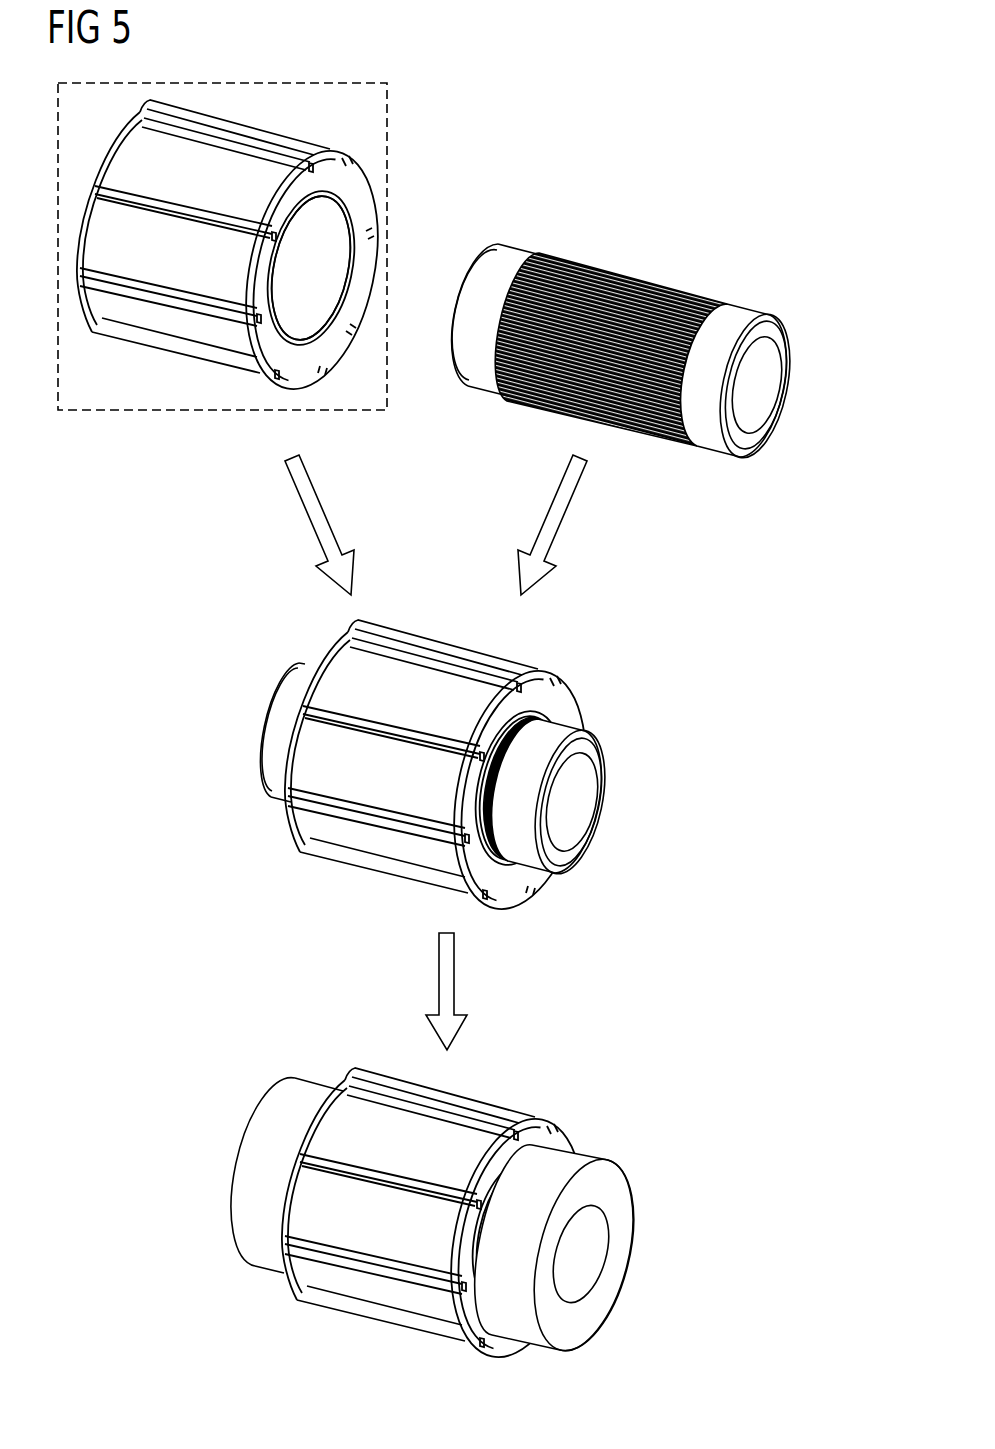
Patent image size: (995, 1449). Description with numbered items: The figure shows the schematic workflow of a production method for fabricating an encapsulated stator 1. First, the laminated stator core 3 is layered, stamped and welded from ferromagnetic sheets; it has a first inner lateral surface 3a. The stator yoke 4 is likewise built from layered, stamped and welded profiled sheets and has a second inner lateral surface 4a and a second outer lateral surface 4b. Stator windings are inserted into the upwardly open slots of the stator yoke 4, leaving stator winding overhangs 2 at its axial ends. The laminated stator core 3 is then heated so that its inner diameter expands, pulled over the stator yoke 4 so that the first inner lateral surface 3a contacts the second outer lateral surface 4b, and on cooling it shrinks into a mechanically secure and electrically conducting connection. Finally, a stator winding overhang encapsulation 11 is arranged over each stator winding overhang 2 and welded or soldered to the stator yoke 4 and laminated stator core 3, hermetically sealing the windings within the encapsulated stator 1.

The encapsulated stator 1 is at (419, 1189).
The stator winding overhang 2 is at (531, 537).
The laminated stator core 3 is at (387, 128).
The first inner lateral surface 3a is at (312, 240).
The stator yoke 4 is at (605, 522).
The second inner lateral surface 4a is at (760, 389).
The second outer lateral surface 4b is at (608, 258).
The stator winding overhang encapsulation 11 is at (250, 1180).